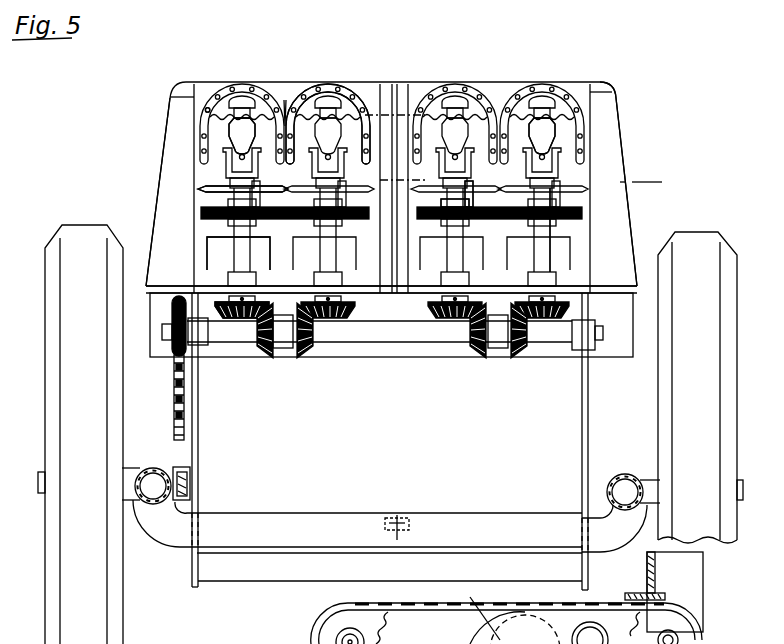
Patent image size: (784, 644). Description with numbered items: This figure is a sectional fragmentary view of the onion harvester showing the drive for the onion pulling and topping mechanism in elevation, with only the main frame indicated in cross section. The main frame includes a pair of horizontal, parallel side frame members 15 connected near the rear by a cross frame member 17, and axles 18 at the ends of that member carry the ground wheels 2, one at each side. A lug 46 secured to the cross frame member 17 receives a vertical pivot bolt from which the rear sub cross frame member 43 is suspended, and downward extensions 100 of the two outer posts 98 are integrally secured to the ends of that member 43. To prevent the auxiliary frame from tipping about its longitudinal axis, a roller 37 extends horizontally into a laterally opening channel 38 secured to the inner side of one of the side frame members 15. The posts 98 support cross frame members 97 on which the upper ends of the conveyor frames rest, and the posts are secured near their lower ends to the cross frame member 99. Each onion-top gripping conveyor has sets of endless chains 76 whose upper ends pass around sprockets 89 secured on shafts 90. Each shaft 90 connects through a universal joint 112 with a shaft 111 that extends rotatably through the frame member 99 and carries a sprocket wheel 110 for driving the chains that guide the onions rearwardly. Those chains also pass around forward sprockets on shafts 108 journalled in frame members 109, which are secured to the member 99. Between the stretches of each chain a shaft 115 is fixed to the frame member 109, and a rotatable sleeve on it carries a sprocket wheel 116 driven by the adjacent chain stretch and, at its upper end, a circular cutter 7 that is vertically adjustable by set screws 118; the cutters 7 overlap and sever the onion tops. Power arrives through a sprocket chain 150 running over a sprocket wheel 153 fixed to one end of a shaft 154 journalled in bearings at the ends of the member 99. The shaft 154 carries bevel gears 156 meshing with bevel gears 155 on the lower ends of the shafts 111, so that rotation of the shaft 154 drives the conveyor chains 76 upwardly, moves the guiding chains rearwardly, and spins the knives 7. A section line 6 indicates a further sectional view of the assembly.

The ground wheels 2 is at (47, 586).
The section line 6 is at (386, 180).
The circular cutter 7 is at (221, 190).
The side frame members 15 is at (162, 470).
The cross frame member 17 is at (278, 516).
The axles 18 is at (129, 477).
The roller 37 is at (190, 473).
The channel 38 is at (188, 464).
The rear sub cross frame member 43 is at (235, 583).
The lug 46 is at (405, 522).
The endless chains 76 is at (285, 98).
The sprockets 89 is at (334, 100).
The shaft 90 is at (588, 89).
The cross frame members 97 is at (206, 96).
The posts 98 is at (194, 248).
The cross frame member 99 is at (497, 287).
The downward extensions 100 is at (199, 398).
The shafts 108 is at (338, 640).
The frame members 109 is at (207, 237).
The sprocket wheels 110 is at (203, 211).
The shafts 111 is at (542, 202).
The universal joints 112 is at (240, 130).
The shaft 115 is at (473, 176).
The sprocket wheel 116 is at (527, 605).
The set screws 118 is at (520, 605).
The sprocket chain 150 is at (174, 408).
The sprocket wheel 153 is at (172, 302).
The shaft 154 is at (377, 327).
The bevel gear 155 is at (346, 307).
The bevel gears 156 is at (296, 358).